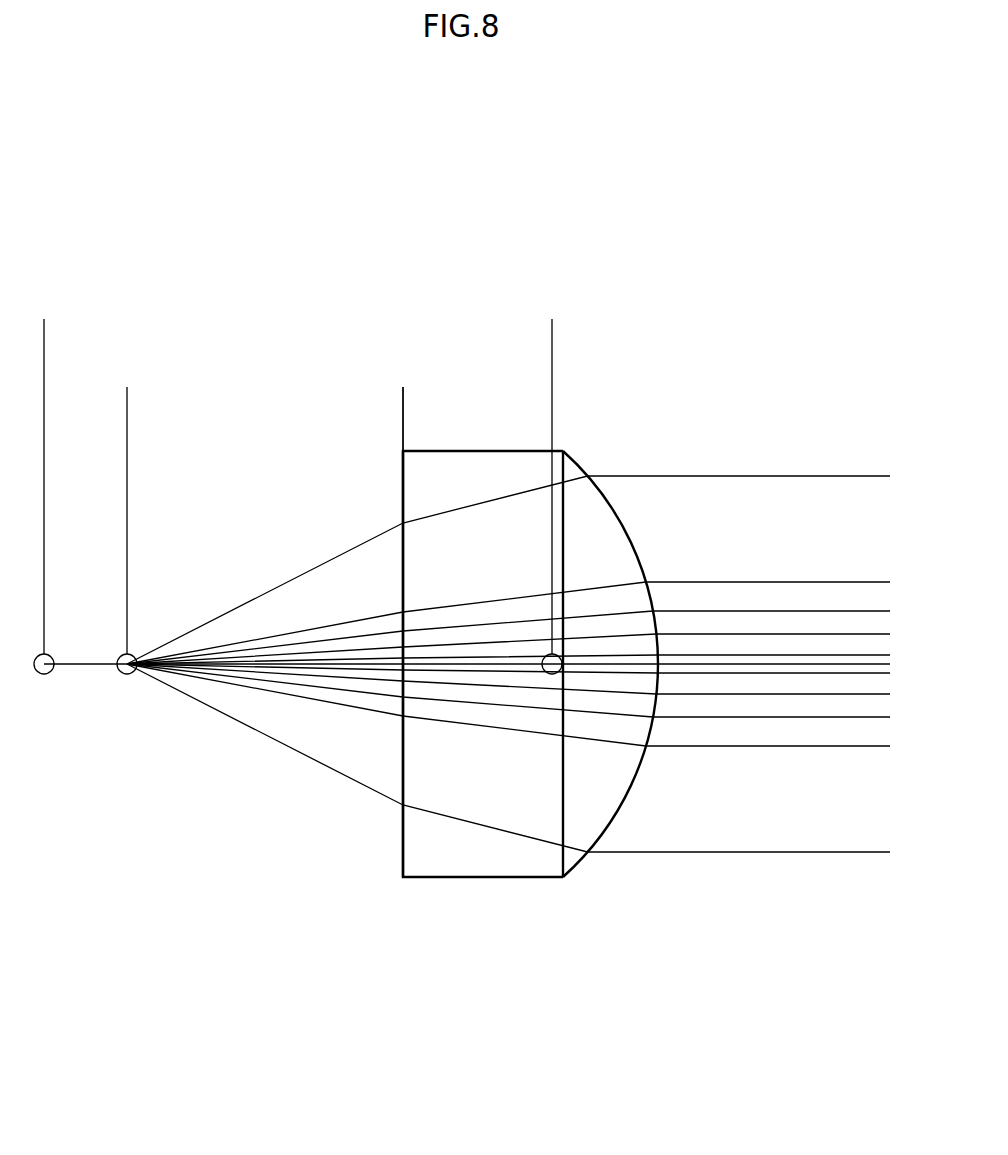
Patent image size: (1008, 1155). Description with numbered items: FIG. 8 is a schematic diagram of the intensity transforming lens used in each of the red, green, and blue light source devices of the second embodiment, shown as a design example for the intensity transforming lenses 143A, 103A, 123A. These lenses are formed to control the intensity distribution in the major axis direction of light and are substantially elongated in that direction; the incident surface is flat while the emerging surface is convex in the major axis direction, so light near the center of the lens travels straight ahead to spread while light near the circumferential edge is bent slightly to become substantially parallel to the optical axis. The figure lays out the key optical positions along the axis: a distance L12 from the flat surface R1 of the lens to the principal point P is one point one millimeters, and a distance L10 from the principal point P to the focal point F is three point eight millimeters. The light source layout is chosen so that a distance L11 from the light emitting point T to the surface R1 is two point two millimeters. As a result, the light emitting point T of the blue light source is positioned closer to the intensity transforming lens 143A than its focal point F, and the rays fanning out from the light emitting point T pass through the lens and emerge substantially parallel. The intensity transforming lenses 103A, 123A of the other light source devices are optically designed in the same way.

The intensity transforming lens 143A is at (482, 878).
The intensity transforming lens 103A is at (530, 664).
The intensity transforming lens 123A is at (530, 664).
The surface R1 is at (402, 843).
The focal point F is at (44, 689).
The light emitting point T is at (127, 689).
The principal point P is at (554, 655).
The distance L10 is at (552, 331).
The distance L11 is at (403, 398).
The distance L12 is at (552, 398).